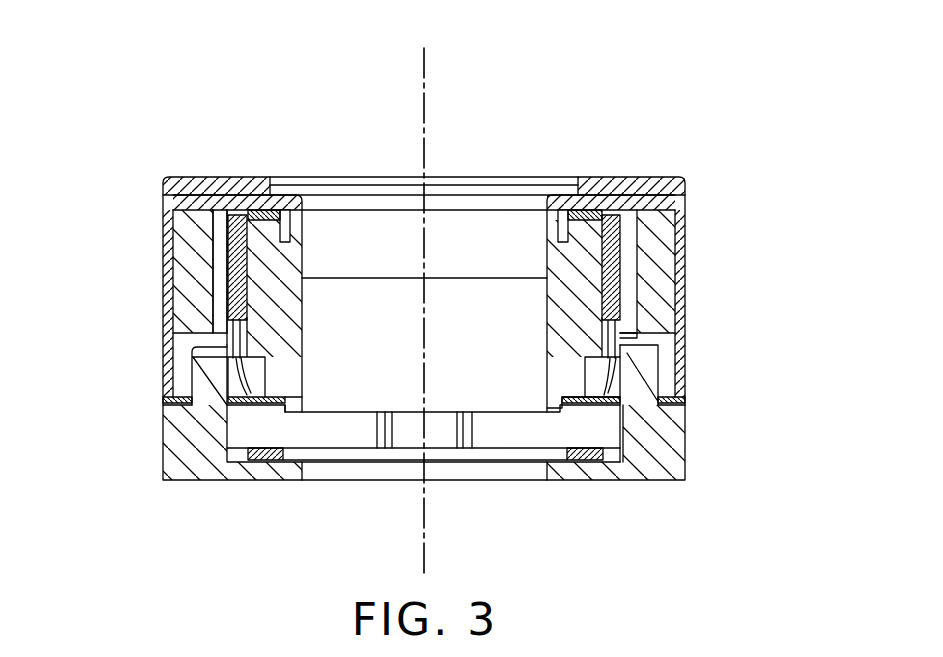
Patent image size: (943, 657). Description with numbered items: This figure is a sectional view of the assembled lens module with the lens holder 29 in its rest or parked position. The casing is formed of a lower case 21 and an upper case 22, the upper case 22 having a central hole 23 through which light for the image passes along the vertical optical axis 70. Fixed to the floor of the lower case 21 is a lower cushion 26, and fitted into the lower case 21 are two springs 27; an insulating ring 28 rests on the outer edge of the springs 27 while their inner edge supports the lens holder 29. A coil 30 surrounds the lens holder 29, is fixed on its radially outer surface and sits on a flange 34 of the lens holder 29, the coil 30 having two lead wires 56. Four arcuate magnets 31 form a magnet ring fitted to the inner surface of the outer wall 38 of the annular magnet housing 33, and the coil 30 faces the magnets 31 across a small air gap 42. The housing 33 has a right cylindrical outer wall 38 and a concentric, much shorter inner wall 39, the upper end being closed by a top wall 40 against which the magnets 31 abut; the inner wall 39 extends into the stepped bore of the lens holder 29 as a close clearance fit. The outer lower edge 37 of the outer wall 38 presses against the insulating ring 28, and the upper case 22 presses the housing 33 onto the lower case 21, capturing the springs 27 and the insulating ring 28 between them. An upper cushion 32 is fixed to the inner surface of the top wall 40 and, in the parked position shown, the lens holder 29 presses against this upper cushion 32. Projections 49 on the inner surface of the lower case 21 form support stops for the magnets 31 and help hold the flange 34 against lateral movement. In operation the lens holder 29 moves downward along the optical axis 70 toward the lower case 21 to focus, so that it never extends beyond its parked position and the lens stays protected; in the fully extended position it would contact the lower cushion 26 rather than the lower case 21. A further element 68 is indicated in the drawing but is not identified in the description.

The lower case 21 is at (182, 460).
The upper case 22 is at (200, 177).
The central hole 23 is at (372, 185).
The lower cushion 26 is at (587, 457).
The springs 27 is at (175, 400).
The insulating ring 28 is at (685, 422).
The lens holder 29 is at (268, 326).
The coil 30 is at (240, 280).
The arcuate magnets 31 is at (193, 243).
The upper cushion 32 is at (268, 207).
The magnet housing 33 is at (683, 262).
The flange 34 is at (226, 350).
The outer lower edge 37 is at (685, 401).
The outer wall 38 is at (678, 295).
The inner wall 39 is at (546, 237).
The top wall 40 is at (615, 209).
The air gap 42 is at (220, 231).
The projections 49 is at (645, 369).
The lead wires 56 is at (627, 352).
The bottom plate 68 is at (602, 430).
The optical axis 70 is at (430, 80).